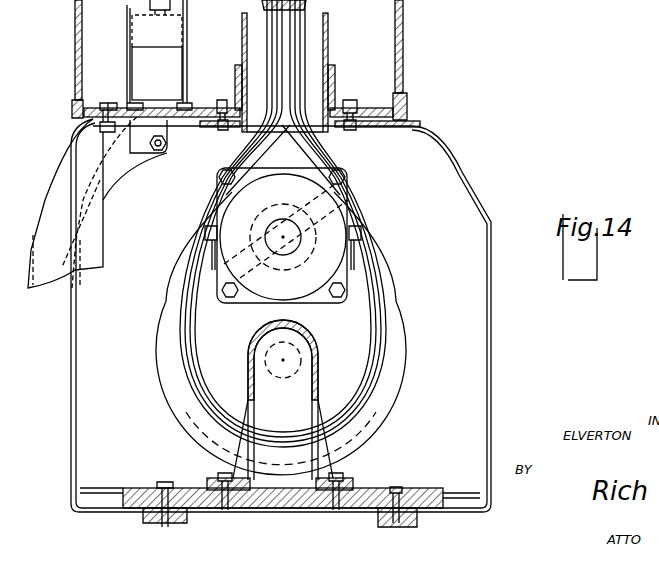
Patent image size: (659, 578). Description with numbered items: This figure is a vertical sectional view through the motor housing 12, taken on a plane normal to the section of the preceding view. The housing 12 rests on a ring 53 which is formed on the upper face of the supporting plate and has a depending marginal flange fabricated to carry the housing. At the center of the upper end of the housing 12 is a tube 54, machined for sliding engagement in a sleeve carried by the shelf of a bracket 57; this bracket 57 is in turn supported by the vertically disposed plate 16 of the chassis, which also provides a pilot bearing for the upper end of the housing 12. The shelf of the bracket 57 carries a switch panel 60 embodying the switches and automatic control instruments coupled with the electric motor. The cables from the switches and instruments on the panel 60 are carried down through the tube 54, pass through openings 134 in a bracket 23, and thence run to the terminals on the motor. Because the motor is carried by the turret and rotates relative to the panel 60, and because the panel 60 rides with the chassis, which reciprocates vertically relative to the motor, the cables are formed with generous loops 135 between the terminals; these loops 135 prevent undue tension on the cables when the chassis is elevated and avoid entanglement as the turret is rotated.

The motor housing 12 is at (480, 190).
The vertically disposed plate 16 is at (50, 200).
The bracket 23 is at (320, 383).
The ring 53 is at (467, 500).
The tube 54 is at (328, 26).
The bracket 57 is at (120, 160).
The switch panel 60 is at (128, 39).
The openings 134 is at (280, 415).
The loops 135 is at (373, 277).